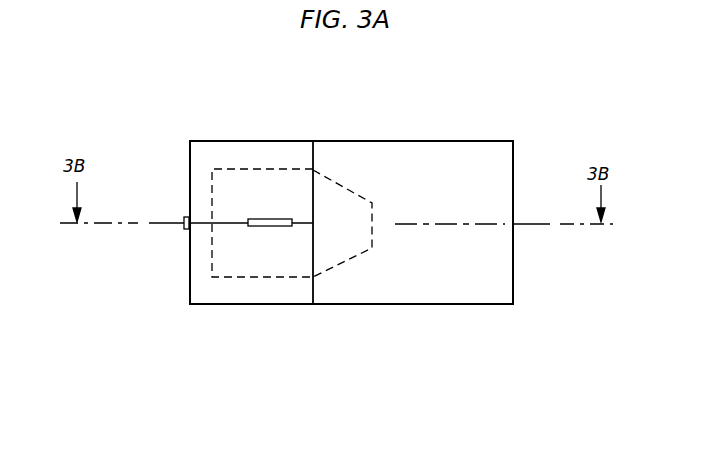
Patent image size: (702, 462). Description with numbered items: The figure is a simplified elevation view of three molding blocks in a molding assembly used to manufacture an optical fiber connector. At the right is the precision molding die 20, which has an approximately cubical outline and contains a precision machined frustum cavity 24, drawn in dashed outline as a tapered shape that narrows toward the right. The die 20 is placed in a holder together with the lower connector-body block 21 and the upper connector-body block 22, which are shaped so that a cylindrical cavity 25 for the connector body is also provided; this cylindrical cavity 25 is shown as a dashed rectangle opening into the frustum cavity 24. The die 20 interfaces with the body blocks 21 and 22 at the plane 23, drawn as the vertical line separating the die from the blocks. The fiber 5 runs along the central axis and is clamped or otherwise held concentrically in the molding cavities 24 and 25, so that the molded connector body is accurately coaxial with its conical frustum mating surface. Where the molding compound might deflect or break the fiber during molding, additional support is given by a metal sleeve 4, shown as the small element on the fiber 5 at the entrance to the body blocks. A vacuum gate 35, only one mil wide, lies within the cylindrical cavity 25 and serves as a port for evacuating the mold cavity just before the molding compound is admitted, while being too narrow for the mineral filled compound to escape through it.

The precision molding die 20 is at (411, 149).
The lower connector-body block 21 is at (197, 298).
The upper connector-body block 22 is at (233, 147).
The plane 23 is at (313, 150).
The frustum cavity 24 is at (352, 255).
The cylindrical cavity 25 is at (283, 278).
The vacuum gate 35 is at (258, 227).
The metal sleeve 4 is at (183, 217).
The fiber 5 is at (158, 221).